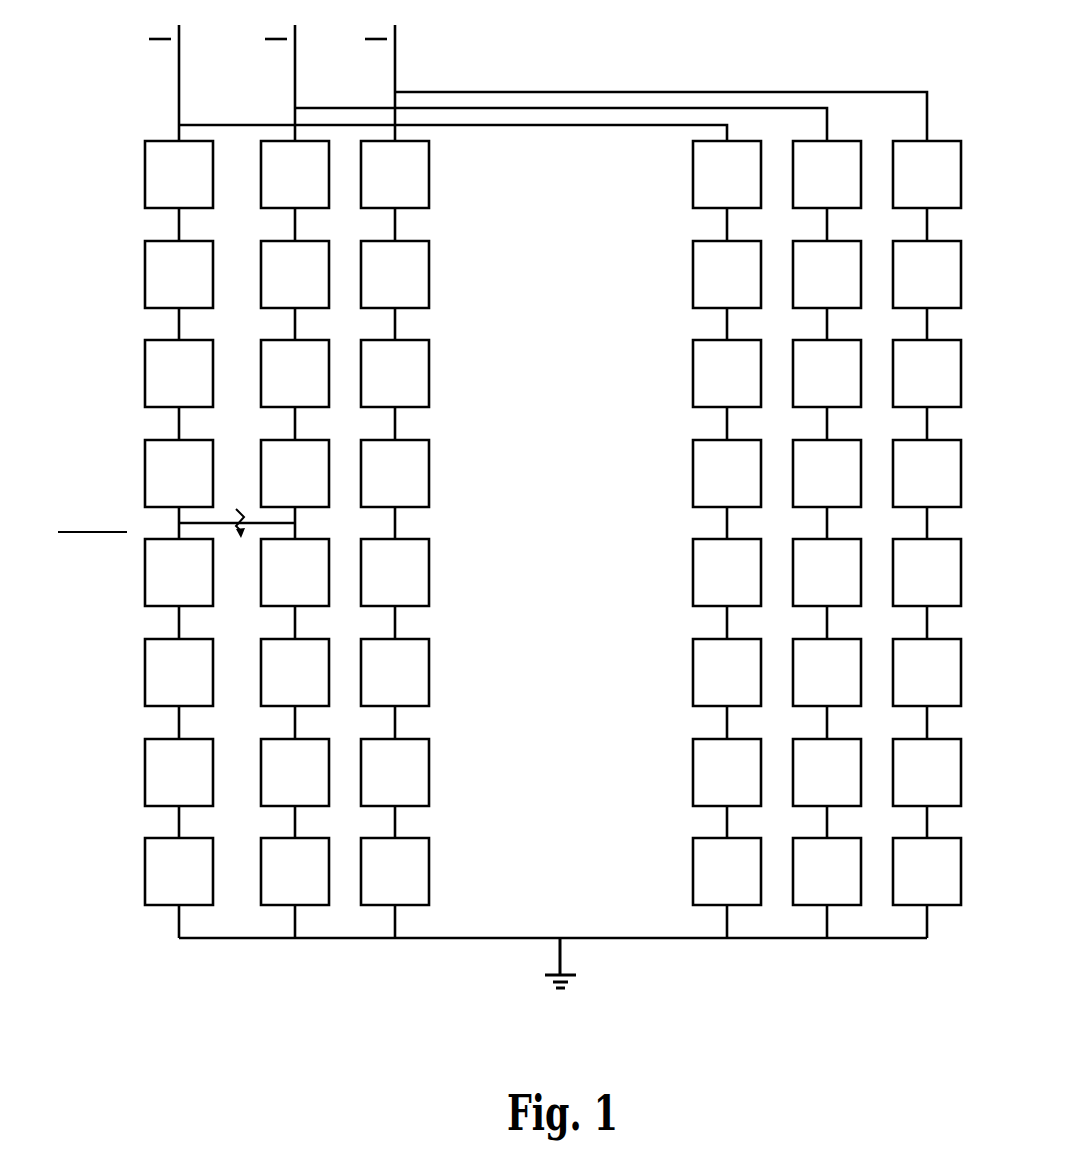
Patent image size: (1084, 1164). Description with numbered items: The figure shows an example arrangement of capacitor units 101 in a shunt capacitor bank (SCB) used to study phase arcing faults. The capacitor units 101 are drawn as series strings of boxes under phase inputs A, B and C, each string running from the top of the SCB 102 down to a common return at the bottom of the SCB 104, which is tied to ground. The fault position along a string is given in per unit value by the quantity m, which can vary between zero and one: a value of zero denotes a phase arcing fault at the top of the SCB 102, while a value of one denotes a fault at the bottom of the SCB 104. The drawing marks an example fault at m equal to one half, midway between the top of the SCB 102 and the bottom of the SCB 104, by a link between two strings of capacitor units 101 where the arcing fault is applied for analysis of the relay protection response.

The capacitor unit 101 is at (418, 185).
The top of the SCB 102 is at (123, 223).
The bottom of the SCB 104 is at (126, 742).